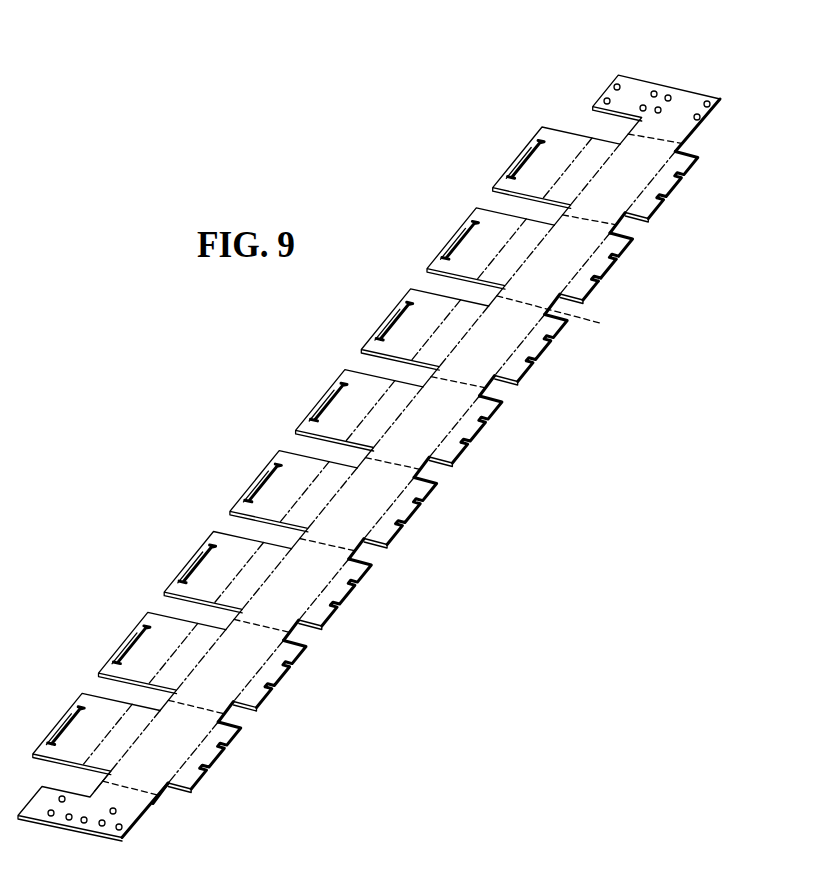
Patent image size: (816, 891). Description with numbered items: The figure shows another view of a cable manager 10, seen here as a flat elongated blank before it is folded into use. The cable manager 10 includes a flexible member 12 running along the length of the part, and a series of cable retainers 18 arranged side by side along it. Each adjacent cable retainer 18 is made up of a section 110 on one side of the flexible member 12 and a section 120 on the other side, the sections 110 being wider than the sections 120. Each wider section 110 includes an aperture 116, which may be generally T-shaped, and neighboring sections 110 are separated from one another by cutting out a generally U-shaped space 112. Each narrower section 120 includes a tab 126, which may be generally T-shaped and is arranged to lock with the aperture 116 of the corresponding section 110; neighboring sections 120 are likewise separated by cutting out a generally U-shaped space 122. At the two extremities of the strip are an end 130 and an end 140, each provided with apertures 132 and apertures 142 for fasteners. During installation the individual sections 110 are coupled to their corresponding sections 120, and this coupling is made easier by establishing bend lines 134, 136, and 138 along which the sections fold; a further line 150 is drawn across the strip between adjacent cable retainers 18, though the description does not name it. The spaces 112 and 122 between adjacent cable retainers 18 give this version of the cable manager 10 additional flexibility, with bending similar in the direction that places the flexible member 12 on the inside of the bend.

The cable manager 10 is at (458, 80).
The flexible member 12 is at (540, 126).
The cable retainers 18 is at (180, 576).
The sections 110 is at (477, 235).
The U-shaped space 112 is at (494, 200).
The aperture 116 is at (452, 237).
The sections 120 is at (620, 247).
The U-shaped space 122 is at (637, 263).
The tab 126 is at (620, 272).
The end 130 is at (93, 822).
The apertures 132 is at (85, 823).
The bend line 134 is at (452, 432).
The bend line 136 is at (388, 432).
The bend line 138 is at (388, 393).
The end 140 is at (676, 97).
The apertures 142 is at (670, 94).
The bend line 150 is at (560, 314).